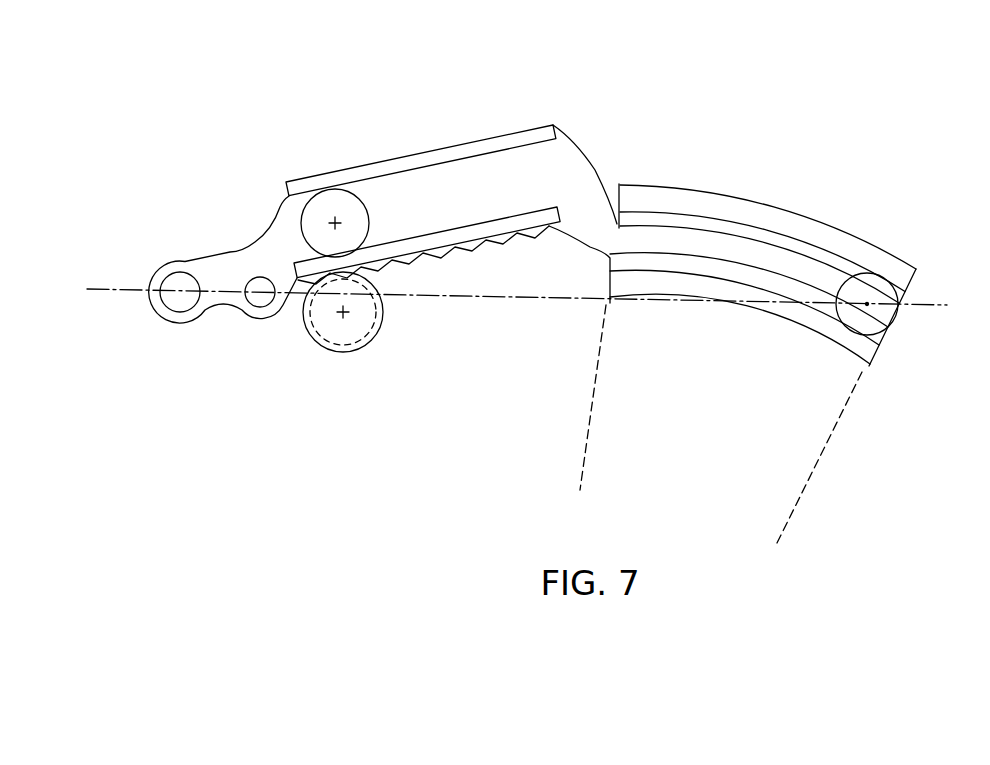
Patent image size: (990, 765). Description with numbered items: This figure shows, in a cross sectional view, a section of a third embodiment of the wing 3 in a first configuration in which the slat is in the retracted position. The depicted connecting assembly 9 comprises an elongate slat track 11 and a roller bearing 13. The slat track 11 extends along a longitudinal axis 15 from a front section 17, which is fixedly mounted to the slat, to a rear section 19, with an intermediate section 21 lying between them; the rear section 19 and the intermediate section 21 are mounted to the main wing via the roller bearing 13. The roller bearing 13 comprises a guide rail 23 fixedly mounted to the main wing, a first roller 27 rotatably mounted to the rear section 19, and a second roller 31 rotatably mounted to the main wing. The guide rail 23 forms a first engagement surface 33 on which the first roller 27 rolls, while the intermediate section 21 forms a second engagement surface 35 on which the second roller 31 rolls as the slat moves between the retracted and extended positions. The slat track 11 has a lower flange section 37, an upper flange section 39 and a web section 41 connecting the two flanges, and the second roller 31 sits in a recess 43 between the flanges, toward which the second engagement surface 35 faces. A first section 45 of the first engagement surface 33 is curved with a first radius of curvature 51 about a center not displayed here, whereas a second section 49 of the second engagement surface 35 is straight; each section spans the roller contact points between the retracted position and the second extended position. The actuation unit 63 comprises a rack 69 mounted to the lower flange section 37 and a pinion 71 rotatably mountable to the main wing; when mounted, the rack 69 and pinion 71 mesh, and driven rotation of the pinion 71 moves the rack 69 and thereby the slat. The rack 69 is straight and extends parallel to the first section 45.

The wing 3 is at (725, 66).
The connecting assembly 9 is at (896, 229).
The slat track 11 is at (472, 140).
The roller bearing 13 is at (866, 157).
The longitudinal axis 15 is at (98, 291).
The front section 17 is at (230, 286).
The rear section 19 is at (826, 275).
The intermediate section 21 is at (405, 157).
The guide rail 23 is at (777, 208).
The first roller 27 is at (895, 318).
The second roller 31 is at (368, 218).
The first engagement surface 33 is at (780, 238).
The second engagement surface 35 is at (469, 168).
The lower flange section 37 is at (457, 235).
The upper flange section 39 is at (522, 142).
The web section 41 is at (493, 206).
The recess 43 is at (548, 178).
The first section 45 is at (688, 214).
The second section 49 is at (415, 180).
The first radius of curvature 51 is at (595, 402).
The actuation unit 63 is at (370, 374).
The rack 69 is at (409, 273).
The pinion 71 is at (362, 330).